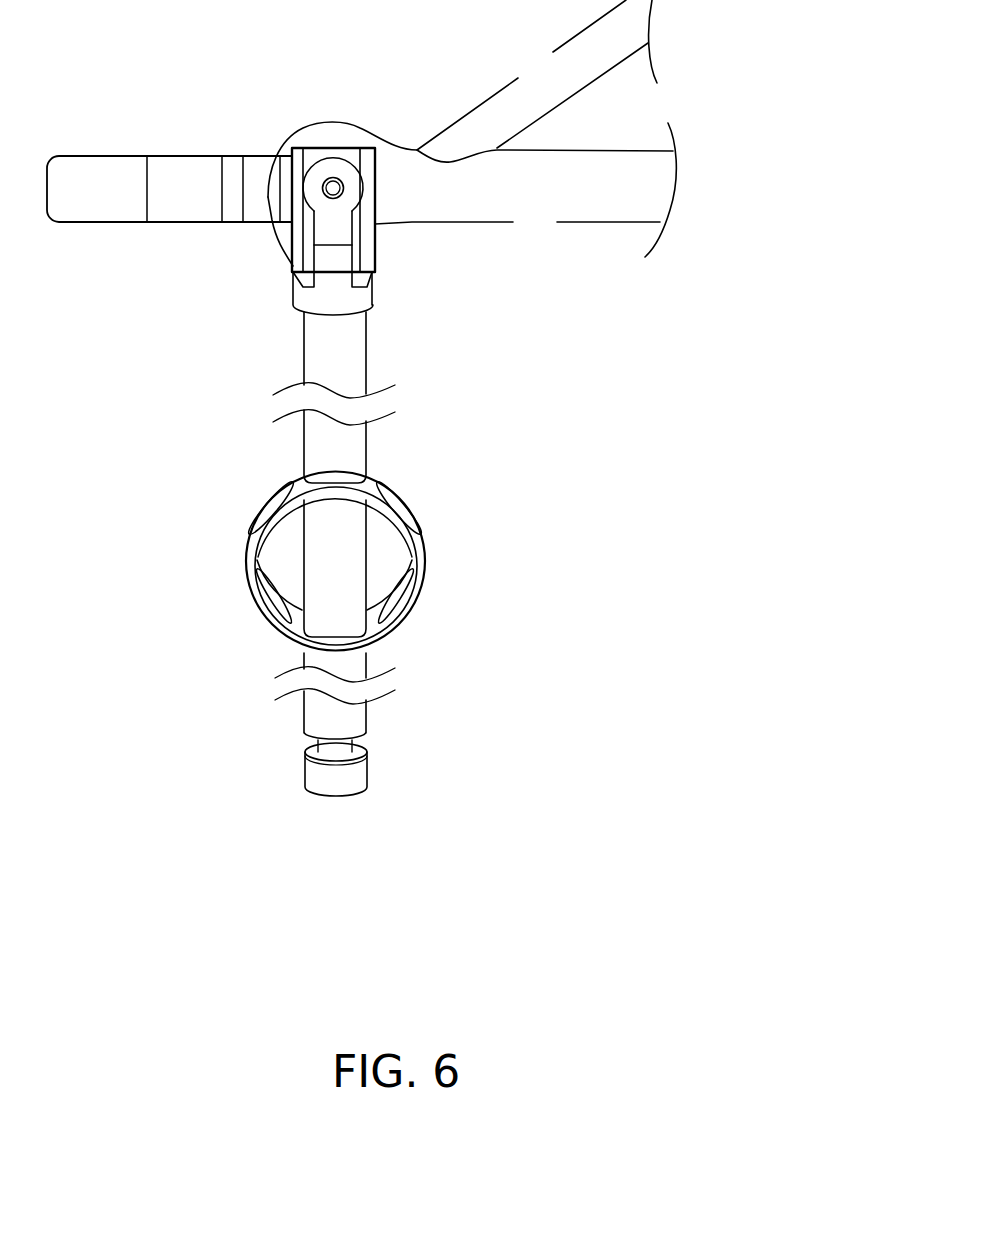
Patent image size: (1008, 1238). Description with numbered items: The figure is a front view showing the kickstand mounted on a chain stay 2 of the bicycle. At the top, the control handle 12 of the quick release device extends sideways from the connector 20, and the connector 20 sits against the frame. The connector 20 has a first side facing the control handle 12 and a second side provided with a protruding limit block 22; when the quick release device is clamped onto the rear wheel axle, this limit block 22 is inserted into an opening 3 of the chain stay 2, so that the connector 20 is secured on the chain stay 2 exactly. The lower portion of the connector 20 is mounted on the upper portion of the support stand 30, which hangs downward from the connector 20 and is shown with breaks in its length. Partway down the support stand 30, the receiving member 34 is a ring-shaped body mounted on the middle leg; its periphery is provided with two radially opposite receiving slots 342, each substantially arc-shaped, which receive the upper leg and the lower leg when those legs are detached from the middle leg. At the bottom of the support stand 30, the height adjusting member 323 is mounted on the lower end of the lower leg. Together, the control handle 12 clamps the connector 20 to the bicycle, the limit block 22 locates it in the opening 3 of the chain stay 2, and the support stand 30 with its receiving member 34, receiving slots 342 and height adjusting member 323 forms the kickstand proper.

The chain stay 2 is at (437, 200).
The control handle 12 is at (190, 170).
The connector 20 is at (317, 155).
The limit block 22 is at (330, 255).
The opening 3 is at (353, 233).
The support stand 30 is at (403, 437).
The receiving member 34 is at (383, 627).
The receiving slots 342 is at (413, 517).
The height adjusting member 323 is at (348, 775).